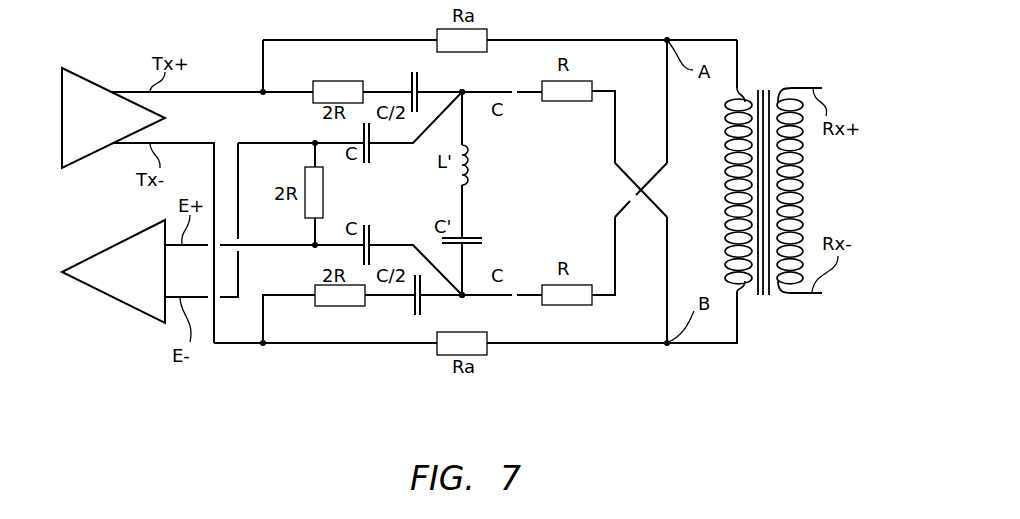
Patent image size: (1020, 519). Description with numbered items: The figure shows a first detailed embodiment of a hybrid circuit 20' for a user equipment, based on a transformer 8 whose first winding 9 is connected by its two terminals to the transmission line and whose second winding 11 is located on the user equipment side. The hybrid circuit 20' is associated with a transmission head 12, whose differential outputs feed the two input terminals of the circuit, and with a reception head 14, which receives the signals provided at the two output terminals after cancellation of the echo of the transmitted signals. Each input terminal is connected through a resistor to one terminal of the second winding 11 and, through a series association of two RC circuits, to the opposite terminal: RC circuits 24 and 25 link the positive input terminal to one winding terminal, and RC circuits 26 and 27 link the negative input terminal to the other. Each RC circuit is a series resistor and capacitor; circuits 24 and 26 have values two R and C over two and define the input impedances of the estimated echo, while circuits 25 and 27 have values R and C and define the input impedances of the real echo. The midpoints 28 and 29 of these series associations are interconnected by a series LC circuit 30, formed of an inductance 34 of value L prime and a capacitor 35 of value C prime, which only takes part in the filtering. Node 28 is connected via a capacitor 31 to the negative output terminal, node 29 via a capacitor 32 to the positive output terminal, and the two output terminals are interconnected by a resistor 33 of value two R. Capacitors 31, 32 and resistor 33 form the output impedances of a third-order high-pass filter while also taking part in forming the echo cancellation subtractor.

The transformer 8 is at (765, 299).
The first winding 9 is at (805, 190).
The second winding 11 is at (725, 152).
The transmission head 12 is at (88, 72).
The reception head 14 is at (108, 249).
The hybrid circuit 20' is at (475, 227).
The RC circuit 24 is at (380, 83).
The RC circuit 25 is at (556, 103).
The RC circuit 26 is at (369, 314).
The RC circuit 27 is at (556, 306).
The midpoint 28 is at (462, 90).
The midpoint 29 is at (463, 297).
The series LC circuit 30 is at (517, 201).
The capacitor 31 is at (371, 153).
The capacitor 32 is at (371, 238).
The resistor 33 is at (324, 192).
The inductance 34 is at (470, 163).
The capacitor 35 is at (476, 242).